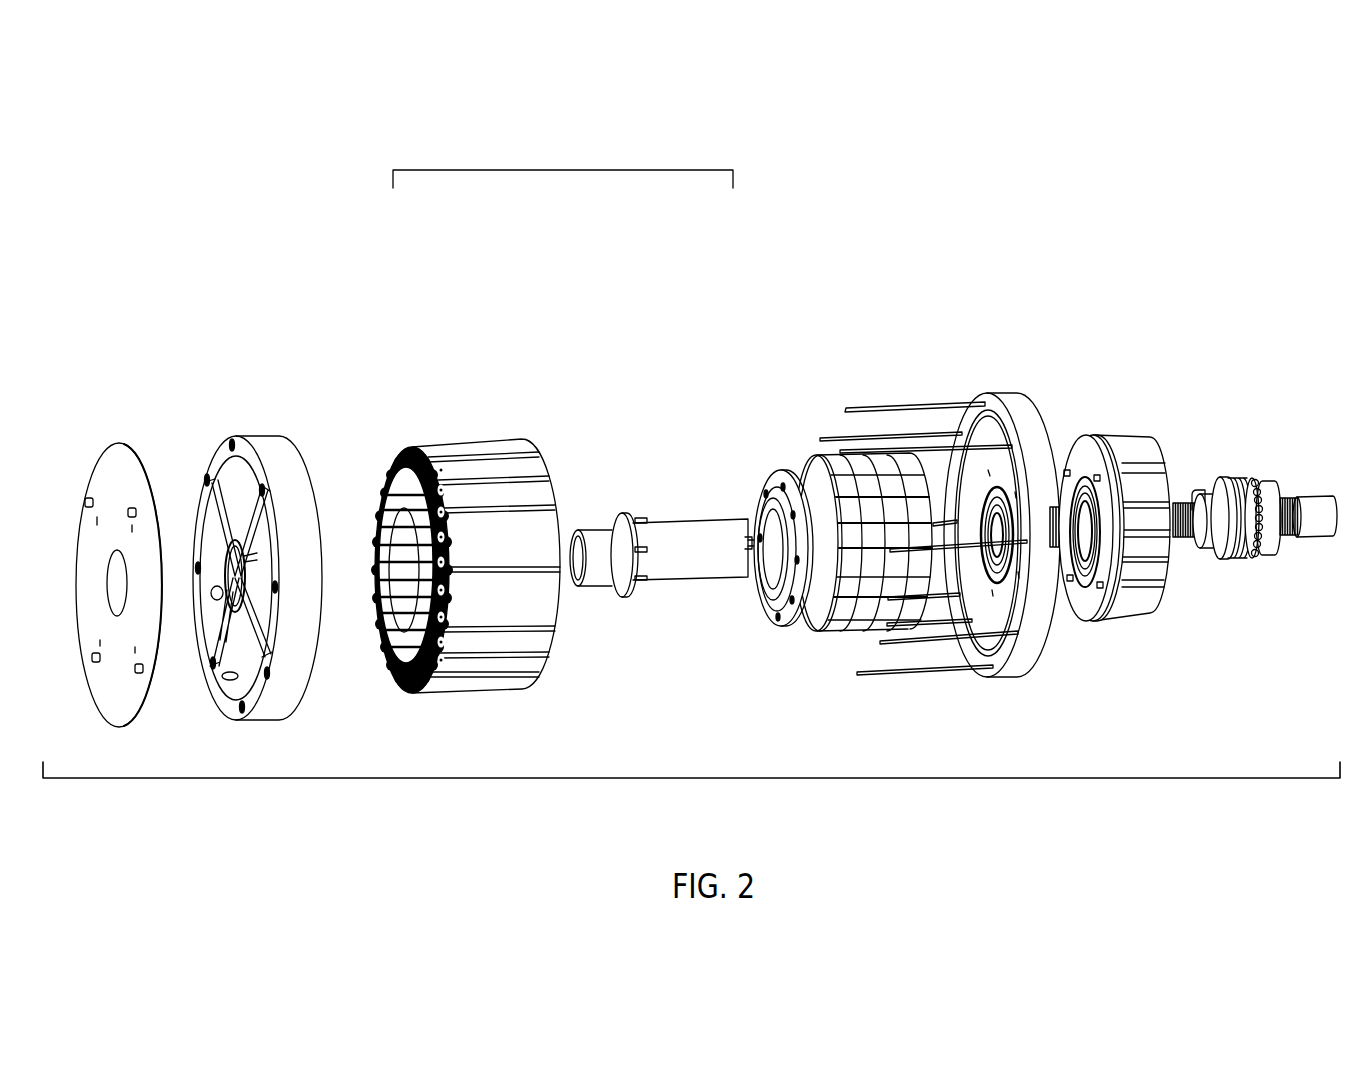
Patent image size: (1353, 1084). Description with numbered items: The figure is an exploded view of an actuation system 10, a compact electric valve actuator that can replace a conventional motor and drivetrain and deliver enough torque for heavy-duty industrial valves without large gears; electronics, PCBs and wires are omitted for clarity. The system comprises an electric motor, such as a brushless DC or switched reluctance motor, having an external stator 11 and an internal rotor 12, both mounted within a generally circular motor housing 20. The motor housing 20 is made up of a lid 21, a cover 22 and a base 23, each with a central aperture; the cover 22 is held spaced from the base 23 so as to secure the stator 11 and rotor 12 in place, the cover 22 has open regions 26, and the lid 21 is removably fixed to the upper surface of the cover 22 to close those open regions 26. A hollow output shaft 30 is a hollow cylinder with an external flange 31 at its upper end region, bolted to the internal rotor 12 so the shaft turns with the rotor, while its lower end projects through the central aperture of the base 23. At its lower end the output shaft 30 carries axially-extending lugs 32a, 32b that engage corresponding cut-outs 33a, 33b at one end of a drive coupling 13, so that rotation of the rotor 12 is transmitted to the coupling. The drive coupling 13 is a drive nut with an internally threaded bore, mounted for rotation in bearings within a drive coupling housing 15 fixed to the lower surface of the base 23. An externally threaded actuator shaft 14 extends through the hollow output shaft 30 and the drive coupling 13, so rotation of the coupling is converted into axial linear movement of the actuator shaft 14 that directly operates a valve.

The actuation system 10 is at (241, 785).
The motor housing 20 is at (561, 162).
The lid 21 is at (110, 458).
The cover 22 is at (351, 453).
The base 23 is at (985, 396).
The open regions 26 is at (228, 513).
The external stator 11 is at (458, 662).
The internal rotor 12 is at (832, 566).
The hollow output shaft 30 is at (667, 560).
The external flange 31 is at (612, 585).
The axially-extending lug 32a is at (728, 535).
The axially-extending lug 32b is at (741, 536).
The drive coupling 13 is at (1205, 556).
The actuator shaft 14 is at (1293, 542).
The drive coupling housing 15 is at (1126, 598).
The cut-out 33a is at (1197, 500).
The cut-out 33b is at (1188, 548).